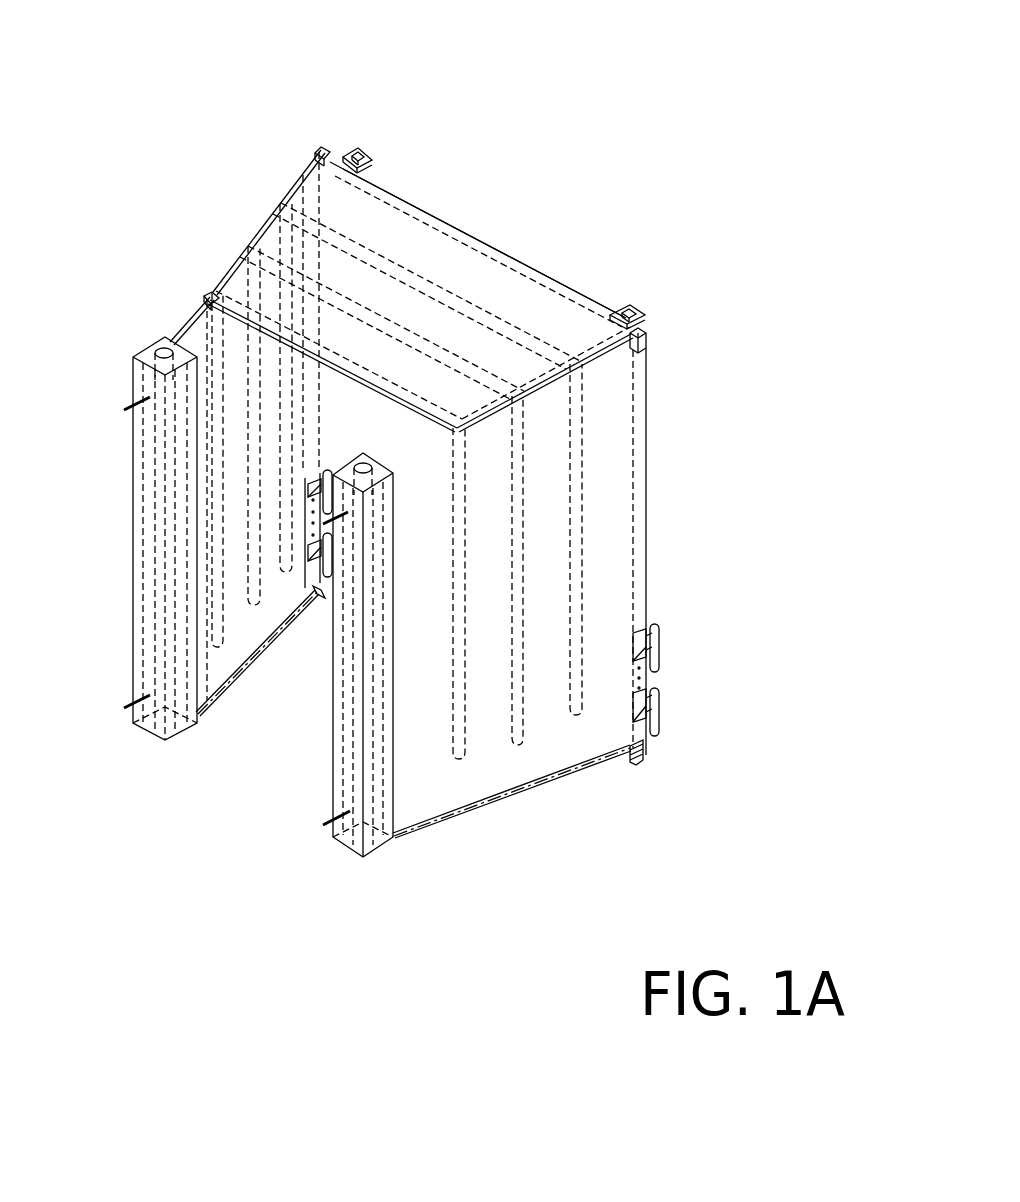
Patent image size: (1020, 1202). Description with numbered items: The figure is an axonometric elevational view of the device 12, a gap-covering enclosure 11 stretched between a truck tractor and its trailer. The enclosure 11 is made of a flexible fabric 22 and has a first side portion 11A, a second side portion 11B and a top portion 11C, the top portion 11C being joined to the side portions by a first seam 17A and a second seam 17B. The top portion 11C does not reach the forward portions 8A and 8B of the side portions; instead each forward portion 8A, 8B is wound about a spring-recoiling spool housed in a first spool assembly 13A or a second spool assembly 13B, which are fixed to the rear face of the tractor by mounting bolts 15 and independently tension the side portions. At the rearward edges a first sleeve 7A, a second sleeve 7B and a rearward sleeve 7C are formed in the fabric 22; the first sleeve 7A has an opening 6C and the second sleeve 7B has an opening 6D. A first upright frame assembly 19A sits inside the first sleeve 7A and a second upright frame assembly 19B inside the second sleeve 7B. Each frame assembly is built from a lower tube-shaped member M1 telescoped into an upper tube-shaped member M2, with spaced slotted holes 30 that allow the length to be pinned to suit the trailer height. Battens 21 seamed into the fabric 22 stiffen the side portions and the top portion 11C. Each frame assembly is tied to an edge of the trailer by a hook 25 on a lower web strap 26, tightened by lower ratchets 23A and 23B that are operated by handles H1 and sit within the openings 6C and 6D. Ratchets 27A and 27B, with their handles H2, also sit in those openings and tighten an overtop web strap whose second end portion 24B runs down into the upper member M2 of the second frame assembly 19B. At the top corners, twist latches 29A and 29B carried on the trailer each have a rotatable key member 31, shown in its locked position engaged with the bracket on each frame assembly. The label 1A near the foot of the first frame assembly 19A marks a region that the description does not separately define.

The device 12 is at (603, 82).
The second upright frame assembly 19B is at (320, 150).
The rotatable key member 31 is at (357, 150).
The twist latch 29B is at (370, 153).
The twist latch 29A is at (621, 310).
The first upright frame assembly 19A is at (648, 330).
The rearward sleeve 7C is at (402, 203).
The top portion 11C is at (423, 237).
The second sleeve 7B is at (285, 195).
The second seam 17B is at (262, 224).
The first seam 17A is at (613, 360).
The second end portion 24B is at (295, 150).
The forward portion 8B is at (204, 300).
The forward portion 8A is at (418, 452).
The opening 6D is at (317, 348).
The opening 6C is at (622, 612).
The battens 21 is at (490, 313).
The fabric 22 is at (612, 475).
The mounting bolts 15 is at (123, 410).
The first spool assembly 13A is at (333, 772).
The second spool assembly 13B is at (133, 660).
The first sleeve 7A is at (634, 538).
The first ratchet 27A is at (646, 637).
The second ratchet 27B is at (322, 467).
The lower ratchet 23A is at (661, 707).
The lower ratchet 23B is at (330, 558).
The handle H1 is at (661, 725).
The handle H2 is at (661, 643).
The slotted holes 30 is at (647, 680).
The lower tube-shaped member M1 is at (647, 683).
The upper tube-shaped member M2 is at (255, 578).
The hook 25 is at (631, 768).
The lower web strap 26 is at (637, 761).
The foot bracket 1A is at (644, 758).
The first side portion 11A is at (593, 740).
The second side portion 11B is at (207, 668).
The enclosure 11 is at (548, 778).